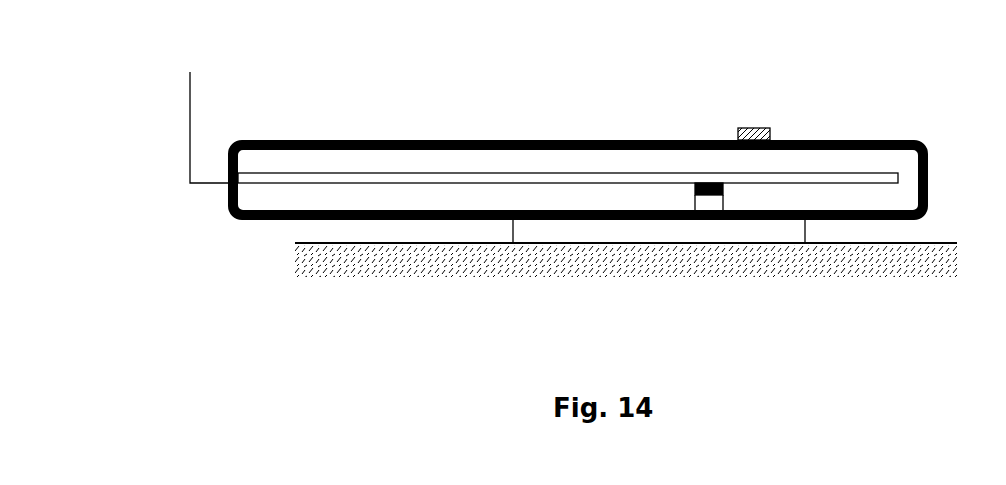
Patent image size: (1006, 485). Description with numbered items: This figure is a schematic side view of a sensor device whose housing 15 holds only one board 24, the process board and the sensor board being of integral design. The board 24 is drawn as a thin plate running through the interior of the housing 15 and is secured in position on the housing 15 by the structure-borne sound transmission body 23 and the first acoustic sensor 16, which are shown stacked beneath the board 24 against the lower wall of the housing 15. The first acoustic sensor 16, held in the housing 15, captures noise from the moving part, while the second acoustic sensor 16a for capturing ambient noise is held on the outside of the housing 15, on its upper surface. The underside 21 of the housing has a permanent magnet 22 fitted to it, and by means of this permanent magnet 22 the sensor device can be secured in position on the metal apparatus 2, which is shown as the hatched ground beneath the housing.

The metal apparatus 2 is at (483, 260).
The housing 15 is at (228, 202).
The first acoustic sensor 16 is at (710, 194).
The second acoustic sensor 16a is at (770, 134).
The underside 21 is at (892, 220).
The permanent magnet 22 is at (590, 237).
The structure-borne sound transmission body 23 is at (713, 210).
The board 24 is at (398, 185).